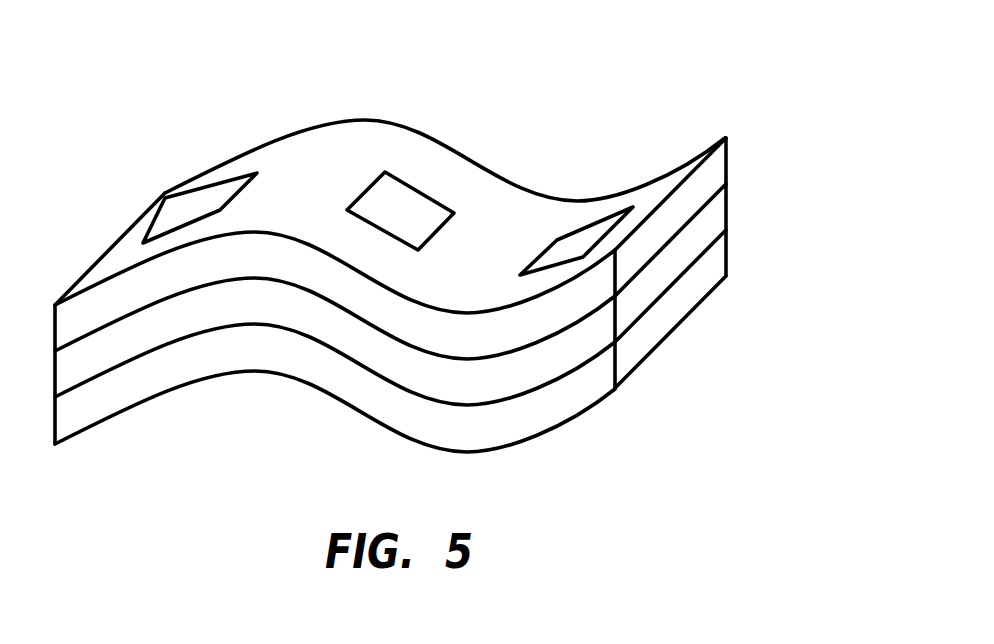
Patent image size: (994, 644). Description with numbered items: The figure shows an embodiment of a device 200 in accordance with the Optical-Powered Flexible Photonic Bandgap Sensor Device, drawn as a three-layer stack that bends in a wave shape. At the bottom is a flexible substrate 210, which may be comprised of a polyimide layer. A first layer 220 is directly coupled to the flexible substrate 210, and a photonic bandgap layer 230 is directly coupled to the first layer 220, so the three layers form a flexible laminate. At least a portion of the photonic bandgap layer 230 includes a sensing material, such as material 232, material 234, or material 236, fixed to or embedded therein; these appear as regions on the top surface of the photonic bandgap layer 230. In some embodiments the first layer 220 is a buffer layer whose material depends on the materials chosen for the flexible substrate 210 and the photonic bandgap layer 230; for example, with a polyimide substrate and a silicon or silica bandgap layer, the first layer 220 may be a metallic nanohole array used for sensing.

The device 200 is at (755, 118).
The flexible substrate 210 is at (693, 285).
The first layer 220 is at (693, 240).
The photonic bandgap layer 230 is at (693, 192).
The material 232 is at (210, 203).
The material 234 is at (407, 207).
The material 236 is at (578, 245).